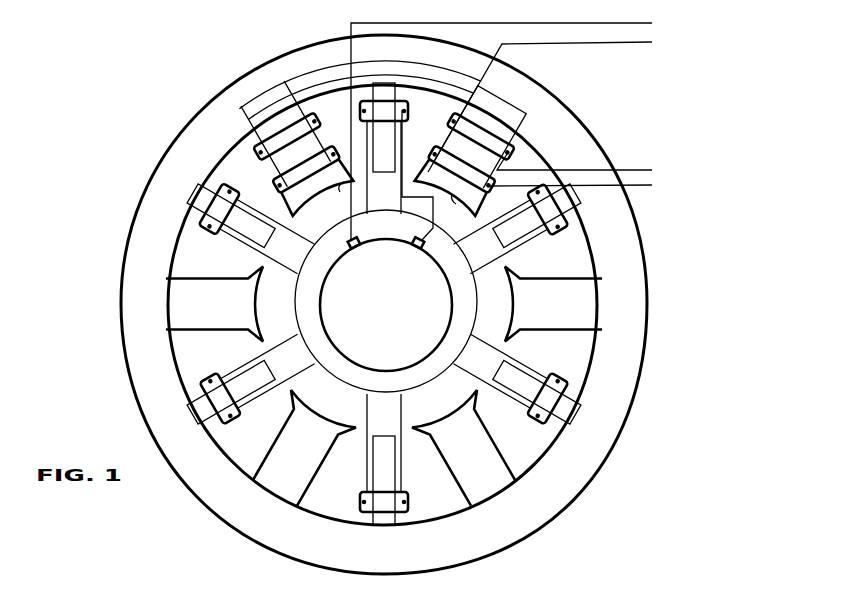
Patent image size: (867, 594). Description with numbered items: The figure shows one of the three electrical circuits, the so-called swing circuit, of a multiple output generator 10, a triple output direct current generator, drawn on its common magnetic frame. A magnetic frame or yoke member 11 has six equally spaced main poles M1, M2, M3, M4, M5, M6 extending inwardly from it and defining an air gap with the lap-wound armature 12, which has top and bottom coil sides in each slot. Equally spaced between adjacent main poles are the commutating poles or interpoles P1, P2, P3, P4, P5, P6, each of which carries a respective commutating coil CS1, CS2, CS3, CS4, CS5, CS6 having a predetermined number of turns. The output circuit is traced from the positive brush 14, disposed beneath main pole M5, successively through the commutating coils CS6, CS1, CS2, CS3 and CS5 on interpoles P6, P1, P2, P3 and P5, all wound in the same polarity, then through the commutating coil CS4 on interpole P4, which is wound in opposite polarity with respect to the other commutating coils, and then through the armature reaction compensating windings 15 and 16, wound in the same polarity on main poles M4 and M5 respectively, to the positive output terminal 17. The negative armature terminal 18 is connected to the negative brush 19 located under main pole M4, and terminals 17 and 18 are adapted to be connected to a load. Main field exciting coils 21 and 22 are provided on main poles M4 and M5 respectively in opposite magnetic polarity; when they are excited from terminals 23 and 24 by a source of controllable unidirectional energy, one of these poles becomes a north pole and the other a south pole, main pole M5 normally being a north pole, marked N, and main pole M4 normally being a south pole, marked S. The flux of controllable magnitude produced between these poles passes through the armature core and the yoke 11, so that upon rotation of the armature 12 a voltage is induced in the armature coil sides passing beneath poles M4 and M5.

The multiple output generator 10 is at (166, 116).
The magnetic frame or yoke member 11 is at (578, 485).
The armature 12 is at (328, 346).
The positive brush 14 is at (414, 242).
The negative brush 19 is at (357, 245).
The armature reaction compensating winding 15 is at (316, 120).
The main field exciting coil 21 is at (335, 153).
The armature reaction compensating winding 16 is at (509, 153).
The main field exciting coil 22 is at (490, 186).
The positive output terminal 17 is at (652, 42).
The negative armature terminal 18 is at (652, 23).
The terminal 23 is at (652, 185).
The terminal 24 is at (652, 170).
The main pole M1 is at (492, 430).
The main pole M2 is at (280, 408).
The main pole M3 is at (210, 280).
The main pole M4 is at (356, 143).
The main pole M5 is at (472, 152).
The main pole M6 is at (556, 281).
The commutating pole or interpole P1 is at (389, 530).
The commutating pole or interpole P2 is at (200, 420).
The commutating pole or interpole P3 is at (204, 224).
The commutating pole or interpole P4 is at (396, 92).
The commutating pole or interpole P5 is at (580, 205).
The commutating pole or interpole P6 is at (576, 392).
The commutating coil CS1 is at (364, 502).
The commutating coil CS2 is at (232, 420).
The commutating coil CS3 is at (238, 184).
The commutating coil CS4 is at (405, 110).
The commutating coil CS5 is at (560, 222).
The commutating coil CS6 is at (536, 418).
The north magnetic pole N is at (438, 190).
The south magnetic pole S is at (322, 196).